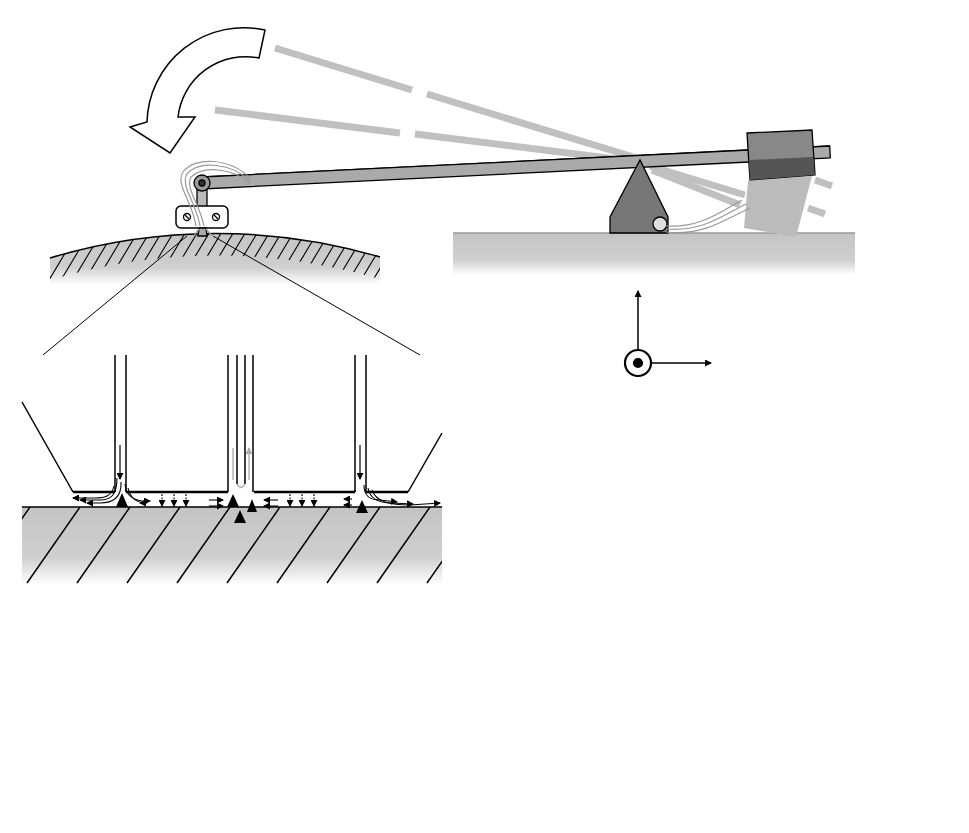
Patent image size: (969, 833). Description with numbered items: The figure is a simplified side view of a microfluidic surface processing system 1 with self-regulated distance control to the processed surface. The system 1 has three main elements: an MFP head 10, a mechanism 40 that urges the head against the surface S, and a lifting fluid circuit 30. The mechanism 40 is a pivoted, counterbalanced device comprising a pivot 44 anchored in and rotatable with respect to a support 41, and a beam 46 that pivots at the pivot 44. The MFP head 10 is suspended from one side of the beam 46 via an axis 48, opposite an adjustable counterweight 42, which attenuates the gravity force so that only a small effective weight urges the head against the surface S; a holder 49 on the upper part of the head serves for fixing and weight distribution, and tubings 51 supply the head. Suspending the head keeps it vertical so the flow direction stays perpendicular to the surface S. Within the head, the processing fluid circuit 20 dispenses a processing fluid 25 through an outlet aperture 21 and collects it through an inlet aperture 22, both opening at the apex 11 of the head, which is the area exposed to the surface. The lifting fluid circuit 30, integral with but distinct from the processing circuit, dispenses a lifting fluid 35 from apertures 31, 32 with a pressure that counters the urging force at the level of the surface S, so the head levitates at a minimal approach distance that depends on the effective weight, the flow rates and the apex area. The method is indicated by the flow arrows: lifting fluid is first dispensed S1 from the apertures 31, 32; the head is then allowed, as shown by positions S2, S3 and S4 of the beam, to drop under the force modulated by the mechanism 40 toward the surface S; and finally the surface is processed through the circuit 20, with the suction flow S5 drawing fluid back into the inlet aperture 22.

The microfluidic surface processing system 1 is at (638, 468).
The MFP head 10 is at (297, 553).
The apex 11 is at (390, 500).
The processing fluid circuit 20 is at (252, 553).
The outlet aperture 21 is at (233, 506).
The inlet aperture 22 is at (252, 511).
The processing fluid 25 is at (227, 559).
The lifting fluid circuit 30 is at (347, 473).
The aperture of the lifting fluid circuit 31 is at (123, 508).
The aperture of the lifting fluid circuit 32 is at (362, 512).
The lifting fluid 35 is at (267, 587).
The mechanism 40 is at (712, 66).
The support 41 is at (845, 228).
The counterweight 42 is at (777, 140).
The pivot 44 is at (643, 157).
The beam 46 is at (415, 172).
The axis 48 is at (197, 188).
The holder 49 is at (177, 221).
The tubings 51 is at (240, 165).
The surface S is at (443, 512).
The dispensing step S1 is at (123, 559).
The approach step S2 is at (355, 67).
The approach step S3 is at (330, 125).
The approach step S4 is at (290, 170).
The suction air flow S5 is at (240, 522).